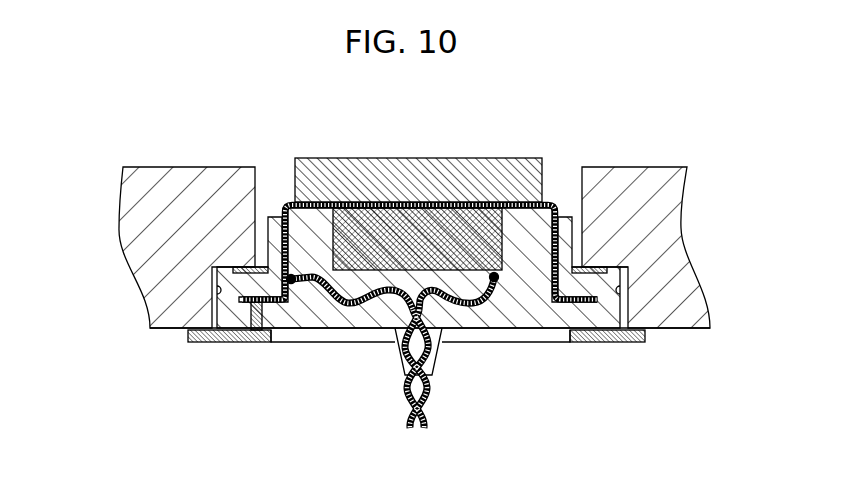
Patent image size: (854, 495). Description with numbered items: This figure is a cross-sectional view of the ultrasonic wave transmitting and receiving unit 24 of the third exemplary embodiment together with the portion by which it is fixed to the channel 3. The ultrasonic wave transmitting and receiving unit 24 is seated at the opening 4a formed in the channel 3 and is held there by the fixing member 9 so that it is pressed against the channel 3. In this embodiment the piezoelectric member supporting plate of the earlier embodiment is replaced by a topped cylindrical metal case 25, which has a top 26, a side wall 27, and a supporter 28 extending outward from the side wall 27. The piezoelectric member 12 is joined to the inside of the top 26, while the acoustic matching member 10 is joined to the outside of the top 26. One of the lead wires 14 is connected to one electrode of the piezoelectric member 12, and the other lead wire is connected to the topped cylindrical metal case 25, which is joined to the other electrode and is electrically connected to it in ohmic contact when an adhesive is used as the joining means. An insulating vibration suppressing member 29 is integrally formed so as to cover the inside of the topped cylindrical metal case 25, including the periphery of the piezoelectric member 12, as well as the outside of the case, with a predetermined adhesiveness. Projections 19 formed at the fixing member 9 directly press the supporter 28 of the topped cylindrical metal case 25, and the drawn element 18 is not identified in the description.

The channel 3 is at (202, 167).
The opening 4a is at (556, 185).
The fixing member 9 is at (628, 332).
The acoustic matching member 10 is at (333, 158).
The piezoelectric member 12 is at (365, 272).
The lead wires 14 is at (432, 388).
The conductive strip 18 is at (228, 342).
The projections 19 is at (260, 342).
The ultrasonic wave transmitting and receiving unit 24 is at (327, 195).
The topped cylindrical metal case 25 is at (327, 211).
The top 26 is at (378, 206).
The side wall 27 is at (284, 250).
The supporter 28 is at (286, 280).
The insulating vibration suppressing member 29 is at (317, 318).